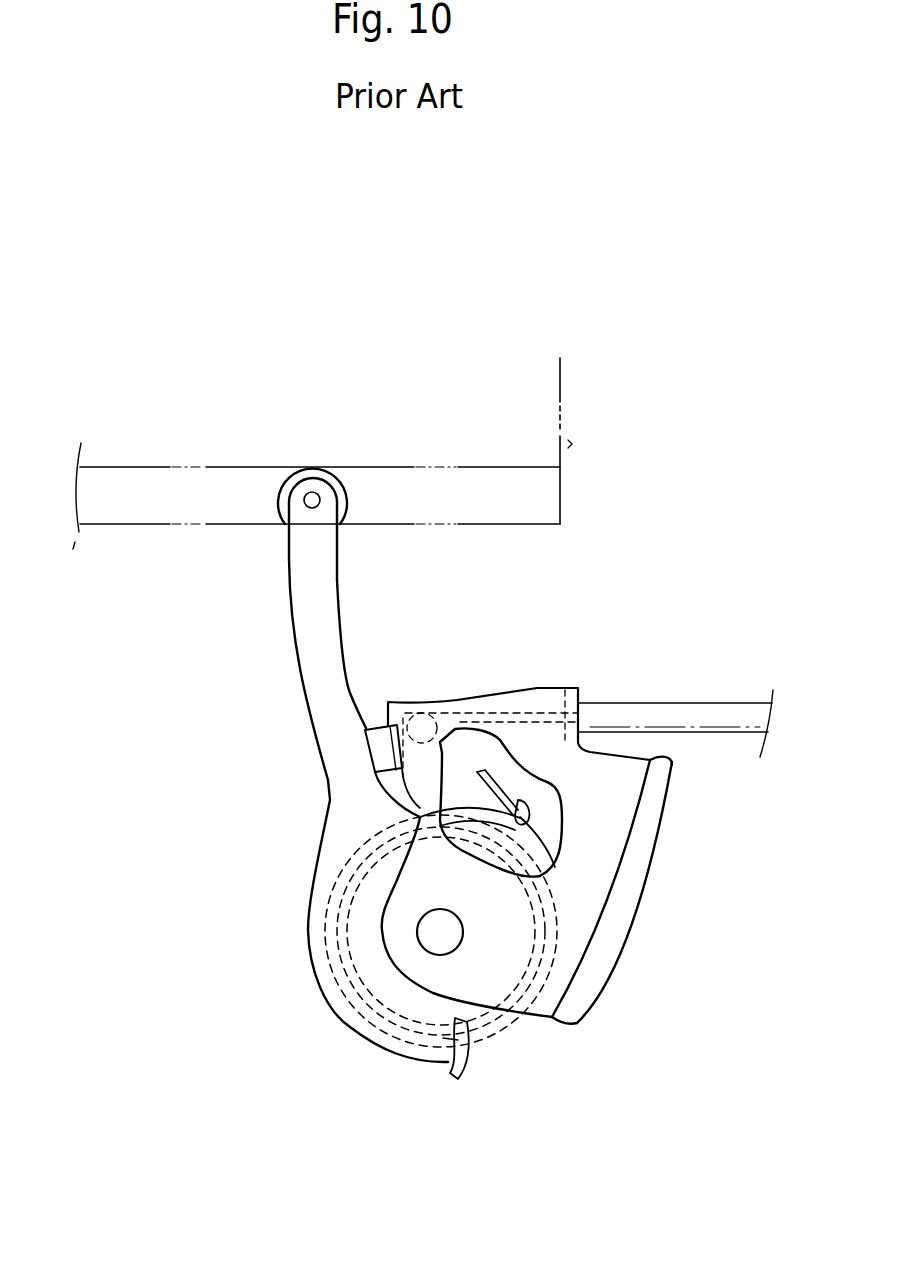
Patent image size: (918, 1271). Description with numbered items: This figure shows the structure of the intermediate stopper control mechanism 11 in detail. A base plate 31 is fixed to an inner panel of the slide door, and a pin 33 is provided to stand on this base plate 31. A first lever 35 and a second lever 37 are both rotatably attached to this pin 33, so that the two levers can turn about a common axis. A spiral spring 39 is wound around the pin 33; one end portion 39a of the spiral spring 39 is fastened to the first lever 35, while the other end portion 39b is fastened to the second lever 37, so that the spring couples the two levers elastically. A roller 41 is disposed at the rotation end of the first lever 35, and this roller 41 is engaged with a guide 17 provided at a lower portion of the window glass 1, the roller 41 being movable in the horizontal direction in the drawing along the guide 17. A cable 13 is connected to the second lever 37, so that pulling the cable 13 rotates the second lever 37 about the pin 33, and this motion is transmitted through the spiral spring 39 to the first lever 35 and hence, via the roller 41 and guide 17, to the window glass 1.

The window glass 1 is at (560, 402).
The guide 17 is at (408, 527).
The roller 41 is at (345, 503).
The first lever 35 is at (330, 632).
The second lever 37 is at (459, 778).
The intermediate stopper control mechanism 11 is at (696, 690).
The cable 13 is at (690, 723).
The base plate 31 is at (588, 920).
The spiral spring 39 is at (547, 965).
The one end portion of spiral spring 39a is at (468, 1064).
The other end portion of spiral spring 39b is at (530, 810).
The pin 33 is at (450, 938).